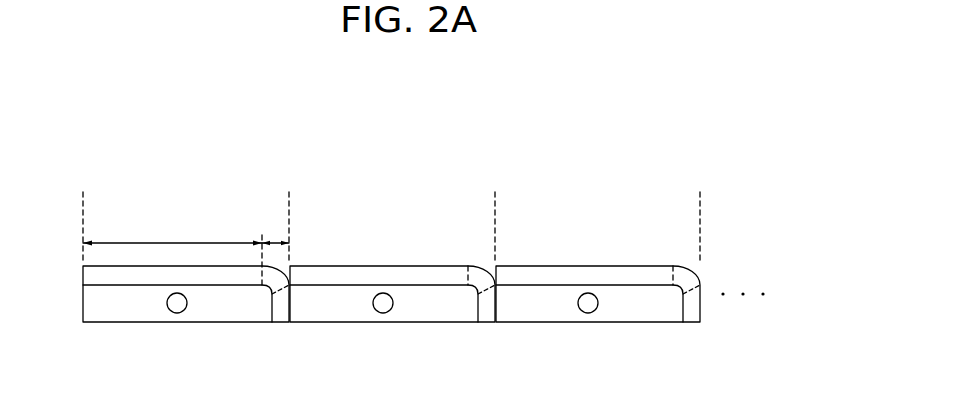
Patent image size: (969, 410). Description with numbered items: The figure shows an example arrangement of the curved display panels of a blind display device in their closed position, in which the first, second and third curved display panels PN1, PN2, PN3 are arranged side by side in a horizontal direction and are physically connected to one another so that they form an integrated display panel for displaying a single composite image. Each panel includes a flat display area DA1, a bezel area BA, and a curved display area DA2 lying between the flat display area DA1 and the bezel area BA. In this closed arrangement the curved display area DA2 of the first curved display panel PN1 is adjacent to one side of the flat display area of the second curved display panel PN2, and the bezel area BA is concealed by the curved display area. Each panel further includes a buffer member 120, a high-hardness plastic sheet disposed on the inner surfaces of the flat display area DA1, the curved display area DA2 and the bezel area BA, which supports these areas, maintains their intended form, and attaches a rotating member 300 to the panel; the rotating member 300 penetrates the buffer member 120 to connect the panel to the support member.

The buffer member 120 is at (90, 304).
The rotating member 300 is at (177, 313).
The bezel area BA is at (280, 313).
The first curved display panel PN1 is at (189, 205).
The second curved display panel PN2 is at (391, 205).
The third curved display panel PN3 is at (596, 205).
The flat display area DA1 is at (172, 231).
The curved display area DA2 is at (275, 231).